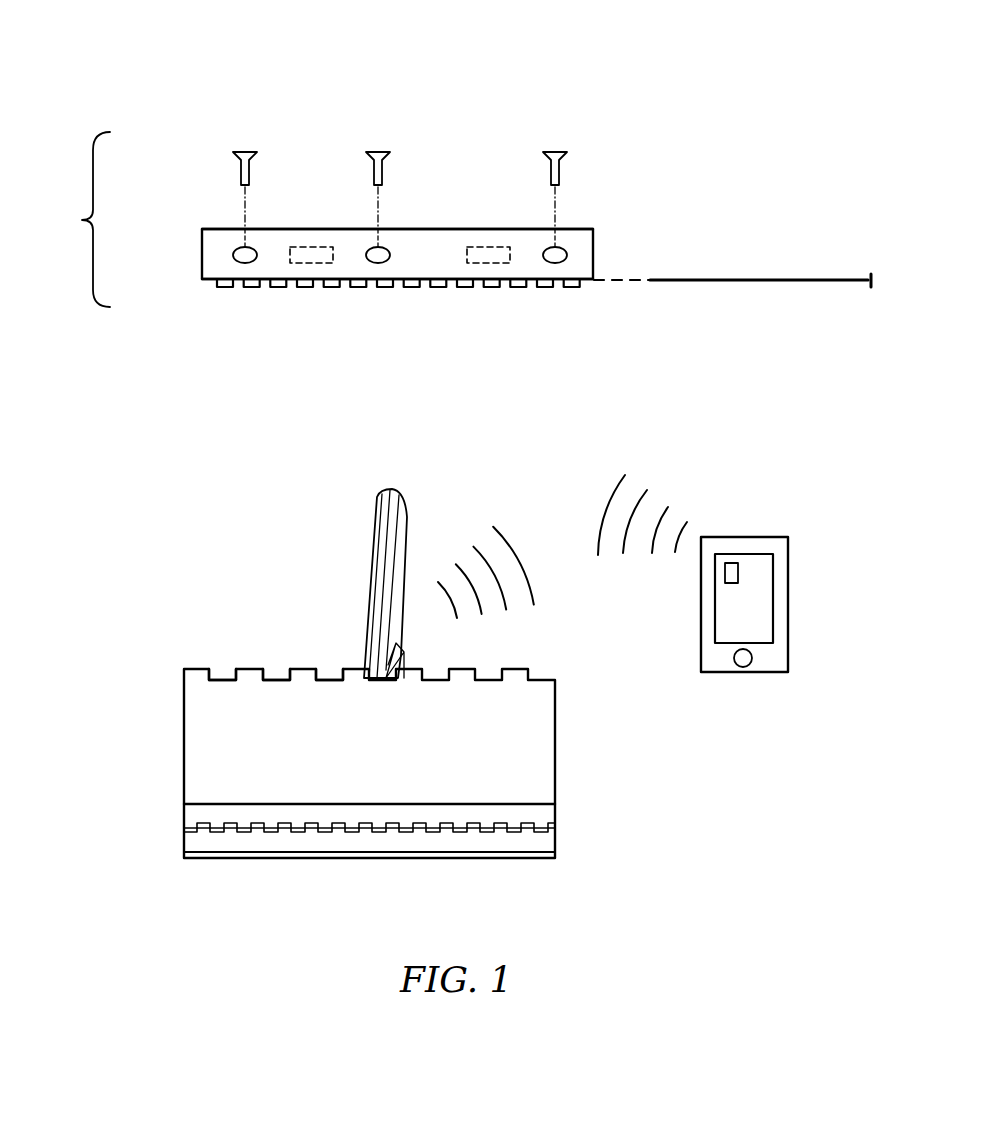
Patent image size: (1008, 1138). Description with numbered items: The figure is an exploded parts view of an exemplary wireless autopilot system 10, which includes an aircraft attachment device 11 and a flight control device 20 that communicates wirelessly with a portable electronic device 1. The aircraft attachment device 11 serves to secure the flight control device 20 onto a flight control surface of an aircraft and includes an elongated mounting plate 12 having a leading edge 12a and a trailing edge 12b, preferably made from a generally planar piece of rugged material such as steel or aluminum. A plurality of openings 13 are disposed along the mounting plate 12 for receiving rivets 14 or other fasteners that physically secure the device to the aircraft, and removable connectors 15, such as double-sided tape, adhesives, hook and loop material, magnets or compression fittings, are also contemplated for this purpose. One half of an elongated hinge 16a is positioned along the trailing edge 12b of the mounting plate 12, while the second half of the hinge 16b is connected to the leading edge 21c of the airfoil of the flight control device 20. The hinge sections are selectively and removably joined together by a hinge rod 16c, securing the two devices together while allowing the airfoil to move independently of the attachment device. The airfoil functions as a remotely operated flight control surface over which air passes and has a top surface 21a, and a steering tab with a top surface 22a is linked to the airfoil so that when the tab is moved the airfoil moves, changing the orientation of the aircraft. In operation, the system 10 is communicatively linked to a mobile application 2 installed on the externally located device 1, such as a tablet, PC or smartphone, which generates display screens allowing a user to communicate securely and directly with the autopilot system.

The wireless autopilot system 10 is at (193, 78).
The aircraft attachment device 11 is at (82, 220).
The elongated mounting plate 12 is at (200, 250).
The leading edge 12a is at (453, 229).
The trailing edge 12b is at (451, 291).
The openings 13 is at (252, 248).
The rivets 14 is at (247, 150).
The removable connectors 15 is at (326, 247).
The first half of elongated hinge 16a is at (408, 288).
The second half of hinge 16b is at (290, 668).
The hinge rod 16c is at (763, 283).
The flight control device 20 is at (145, 722).
The top surface 21a is at (391, 757).
The leading edge 21c is at (329, 667).
The top surface 22a is at (362, 835).
The portable electronic device 1 is at (788, 582).
The mobile application 2 is at (730, 563).